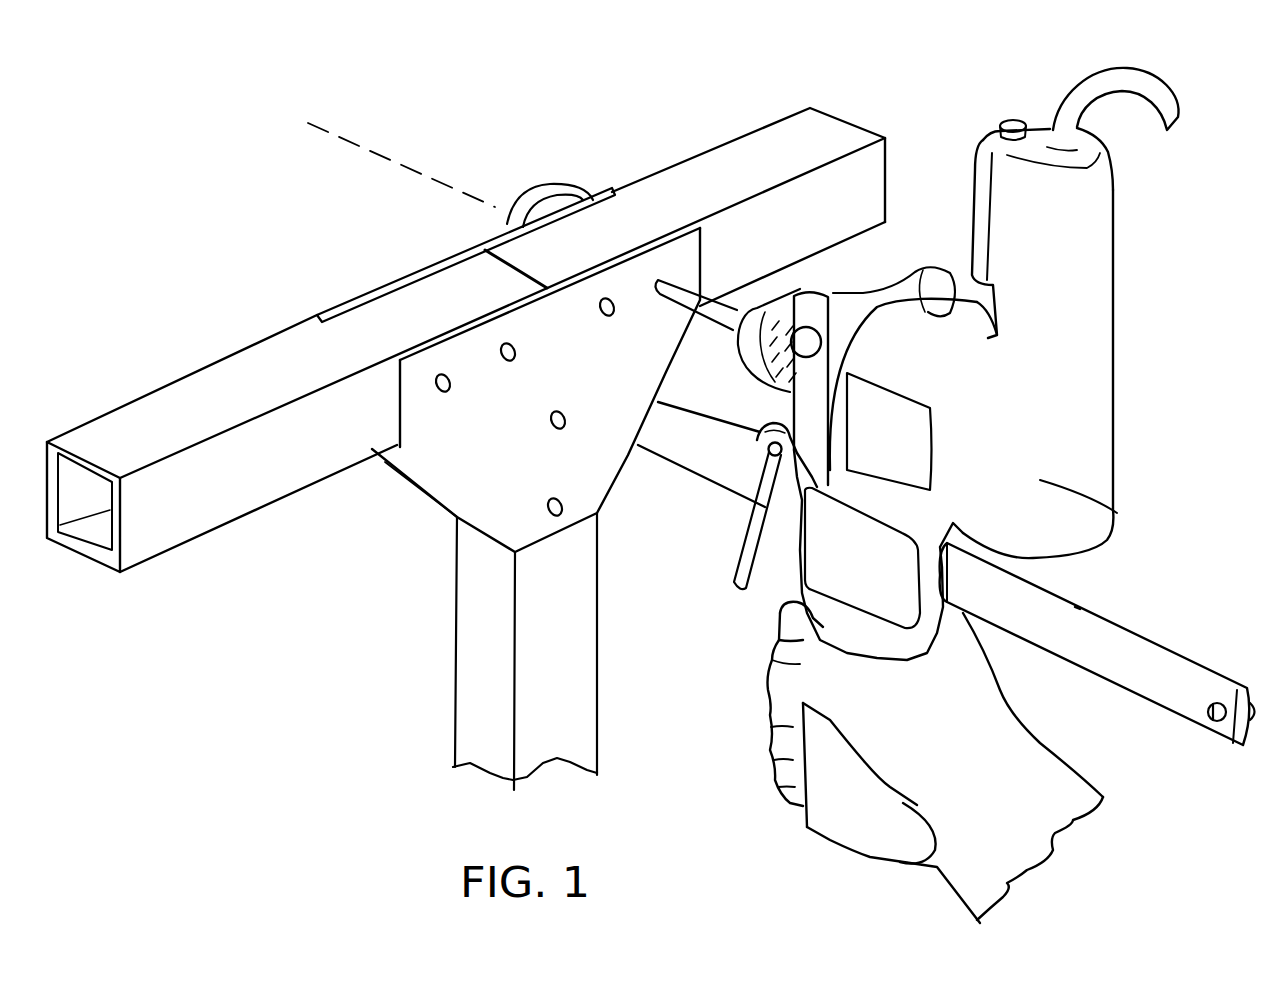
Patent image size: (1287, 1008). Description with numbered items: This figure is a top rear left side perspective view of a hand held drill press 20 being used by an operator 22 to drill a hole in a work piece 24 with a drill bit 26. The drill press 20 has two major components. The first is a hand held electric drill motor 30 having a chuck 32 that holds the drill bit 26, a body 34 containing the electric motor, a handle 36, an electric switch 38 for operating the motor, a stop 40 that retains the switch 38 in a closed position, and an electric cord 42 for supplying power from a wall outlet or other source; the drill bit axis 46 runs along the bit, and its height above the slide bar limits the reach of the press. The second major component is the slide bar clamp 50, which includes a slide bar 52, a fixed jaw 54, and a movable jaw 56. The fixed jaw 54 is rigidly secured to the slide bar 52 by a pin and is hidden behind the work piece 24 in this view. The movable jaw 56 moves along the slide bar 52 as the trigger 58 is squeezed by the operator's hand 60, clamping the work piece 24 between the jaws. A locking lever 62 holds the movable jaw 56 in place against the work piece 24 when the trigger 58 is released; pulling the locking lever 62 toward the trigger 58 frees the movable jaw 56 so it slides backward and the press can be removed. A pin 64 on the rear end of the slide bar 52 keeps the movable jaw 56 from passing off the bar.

The hand held drill press 20 is at (1172, 407).
The operator 22 is at (1055, 805).
The work piece 24 is at (757, 148).
The drill bit 26 is at (735, 305).
The hand held electric drill motor 30 is at (1073, 358).
The chuck 32 is at (862, 280).
The body 34 is at (1087, 537).
The handle 36 is at (1073, 213).
The electric switch 38 is at (973, 187).
The stop 40 is at (1007, 123).
The electric cord 42 is at (1080, 95).
The drill bit axis 46 is at (363, 147).
The slide bar clamp 50 is at (1163, 645).
The slide bar 52 is at (1075, 607).
The fixed jaw 54 is at (565, 183).
The movable jaw 56 is at (797, 591).
The trigger 58 is at (790, 787).
The operator's hand 60 is at (787, 654).
The locking lever 62 is at (743, 552).
The pin 64 is at (1197, 720).